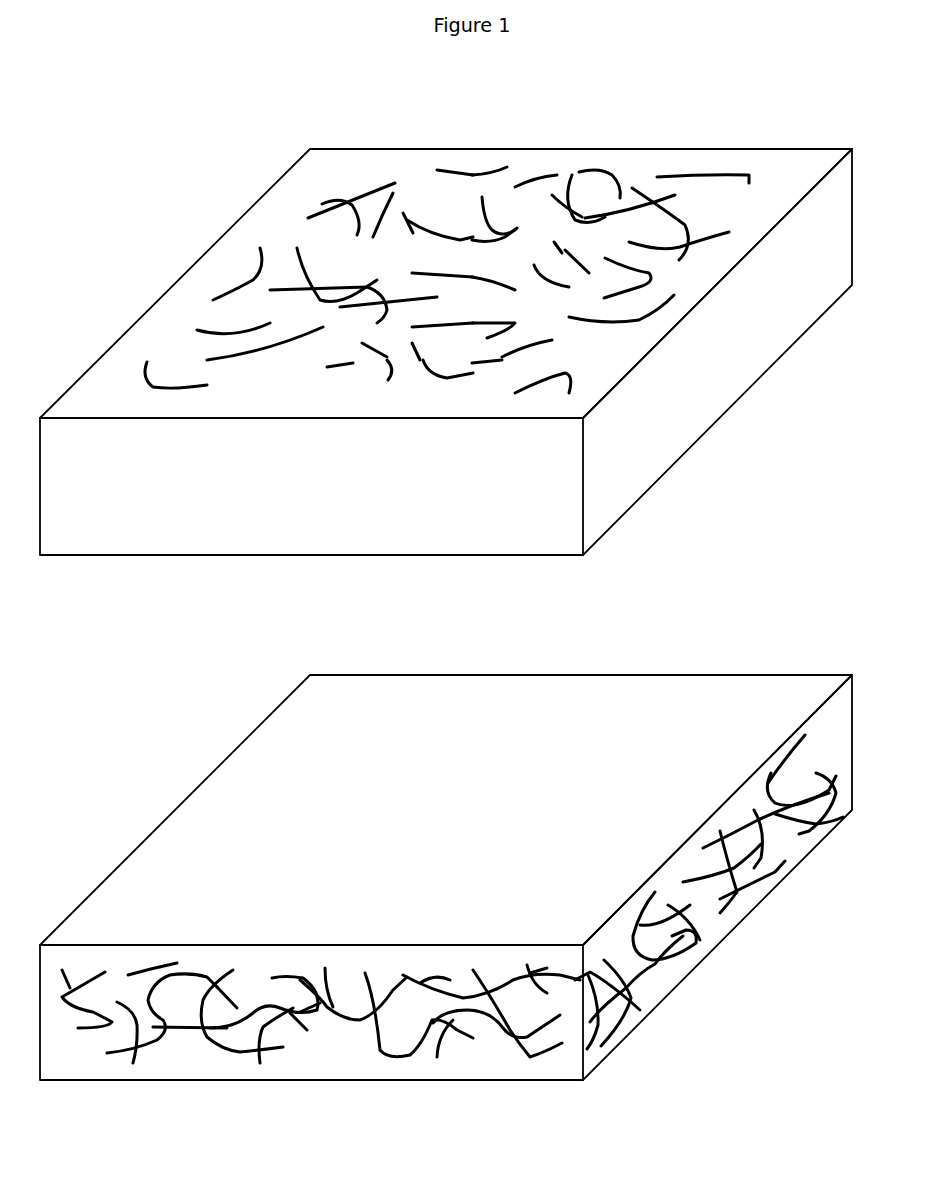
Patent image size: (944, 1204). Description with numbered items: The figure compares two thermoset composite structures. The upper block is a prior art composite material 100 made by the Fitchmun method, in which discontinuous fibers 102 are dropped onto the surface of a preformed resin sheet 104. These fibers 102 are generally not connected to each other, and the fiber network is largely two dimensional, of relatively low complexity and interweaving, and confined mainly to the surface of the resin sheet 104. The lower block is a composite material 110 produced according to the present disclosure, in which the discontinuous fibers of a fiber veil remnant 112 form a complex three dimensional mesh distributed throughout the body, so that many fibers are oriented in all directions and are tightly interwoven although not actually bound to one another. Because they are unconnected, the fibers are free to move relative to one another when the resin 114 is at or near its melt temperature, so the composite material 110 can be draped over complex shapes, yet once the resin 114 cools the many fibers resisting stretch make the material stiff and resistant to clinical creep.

The prior art composite material 100 is at (735, 135).
The fibers 102 is at (147, 350).
The resin sheet 104 is at (704, 380).
The composite material 110 is at (754, 660).
The fiber veil remnant 112 is at (275, 1053).
The resin 114 is at (341, 1052).